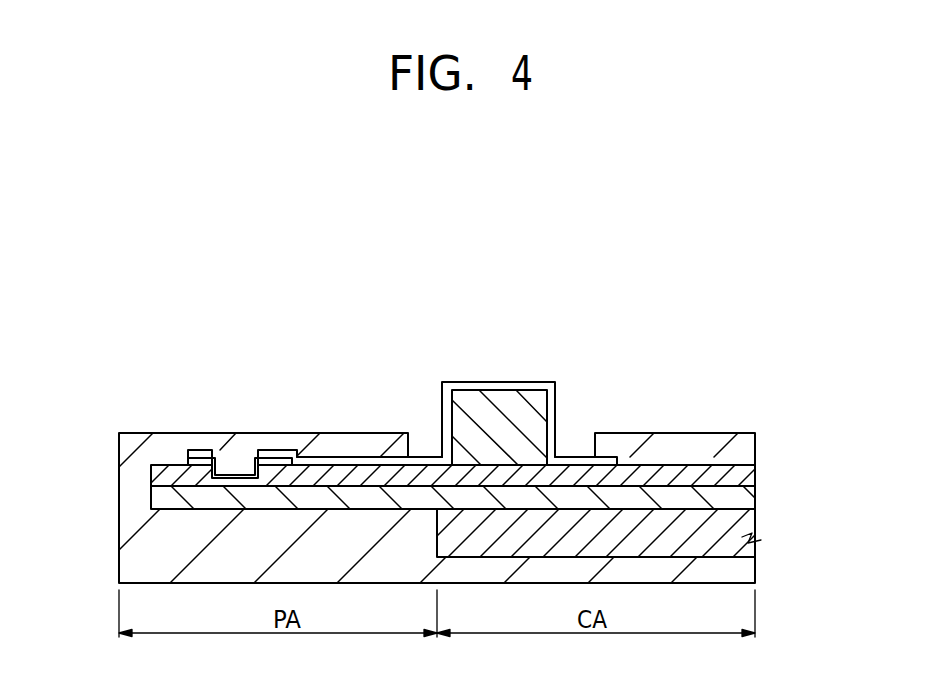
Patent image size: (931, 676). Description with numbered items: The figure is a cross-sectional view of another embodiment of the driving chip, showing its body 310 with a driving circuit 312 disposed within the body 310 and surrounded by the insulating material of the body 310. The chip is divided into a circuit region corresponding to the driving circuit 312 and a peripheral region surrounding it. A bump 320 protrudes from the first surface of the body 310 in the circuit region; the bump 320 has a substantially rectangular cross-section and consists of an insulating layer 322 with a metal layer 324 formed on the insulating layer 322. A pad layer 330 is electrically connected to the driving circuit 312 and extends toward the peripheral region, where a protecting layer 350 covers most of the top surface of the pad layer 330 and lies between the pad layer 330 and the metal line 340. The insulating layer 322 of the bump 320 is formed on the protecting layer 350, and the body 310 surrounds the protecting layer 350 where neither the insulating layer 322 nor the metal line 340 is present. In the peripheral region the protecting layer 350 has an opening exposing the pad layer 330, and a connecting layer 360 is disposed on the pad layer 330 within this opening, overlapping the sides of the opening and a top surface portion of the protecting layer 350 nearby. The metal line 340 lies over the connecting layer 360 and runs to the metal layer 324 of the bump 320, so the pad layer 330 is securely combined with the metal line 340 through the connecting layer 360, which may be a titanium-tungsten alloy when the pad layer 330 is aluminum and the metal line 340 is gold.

The body 310 is at (127, 507).
The driving circuit 312 is at (752, 522).
The bump 320 is at (567, 412).
The insulating layer 322 is at (540, 393).
The metal layer 324 is at (552, 412).
The pad layer 330 is at (752, 495).
The metal line 340 is at (332, 460).
The protecting layer 350 is at (752, 470).
The connecting layer 360 is at (239, 478).